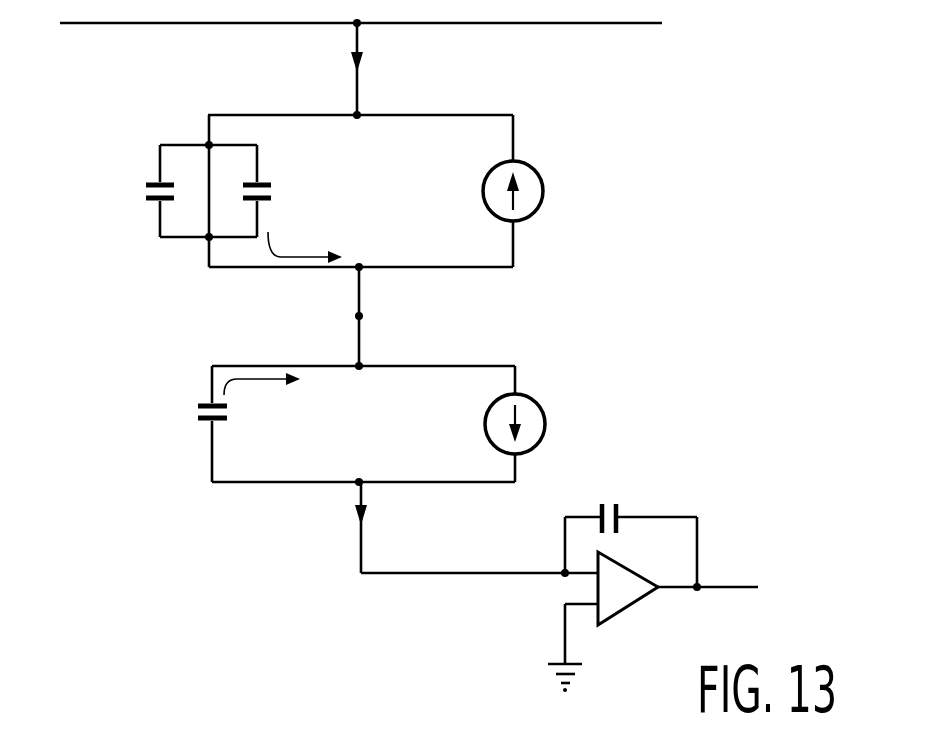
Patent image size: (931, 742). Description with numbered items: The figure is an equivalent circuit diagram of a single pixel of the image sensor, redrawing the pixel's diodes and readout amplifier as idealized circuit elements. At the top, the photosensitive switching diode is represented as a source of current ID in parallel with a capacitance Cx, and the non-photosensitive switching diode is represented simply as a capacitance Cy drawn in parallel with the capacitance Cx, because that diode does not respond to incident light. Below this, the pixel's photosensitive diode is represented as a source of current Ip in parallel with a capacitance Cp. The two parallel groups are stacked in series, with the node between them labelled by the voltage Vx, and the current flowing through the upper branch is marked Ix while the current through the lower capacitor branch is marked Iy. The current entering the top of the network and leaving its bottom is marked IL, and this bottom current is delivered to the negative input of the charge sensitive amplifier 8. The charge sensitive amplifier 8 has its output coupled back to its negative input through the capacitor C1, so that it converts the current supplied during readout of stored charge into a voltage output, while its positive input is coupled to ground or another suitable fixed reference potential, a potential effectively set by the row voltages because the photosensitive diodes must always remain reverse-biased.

The capacitance Cx is at (147, 191).
The capacitance Cy is at (271, 190).
The capacitance Cp is at (196, 412).
The capacitor C1 is at (608, 500).
The charge sensitive amplifier 8 is at (623, 590).
The current source ID is at (532, 191).
The current source Ip is at (533, 424).
The current IL is at (390, 309).
The current Ix is at (318, 245).
The current Iy is at (262, 402).
The voltage Vx is at (390, 323).